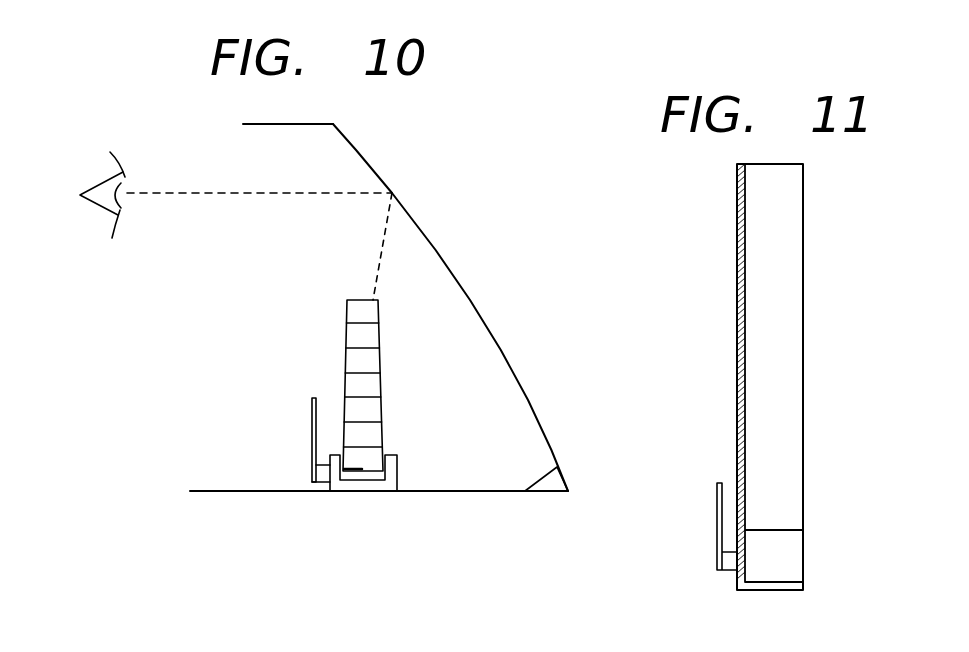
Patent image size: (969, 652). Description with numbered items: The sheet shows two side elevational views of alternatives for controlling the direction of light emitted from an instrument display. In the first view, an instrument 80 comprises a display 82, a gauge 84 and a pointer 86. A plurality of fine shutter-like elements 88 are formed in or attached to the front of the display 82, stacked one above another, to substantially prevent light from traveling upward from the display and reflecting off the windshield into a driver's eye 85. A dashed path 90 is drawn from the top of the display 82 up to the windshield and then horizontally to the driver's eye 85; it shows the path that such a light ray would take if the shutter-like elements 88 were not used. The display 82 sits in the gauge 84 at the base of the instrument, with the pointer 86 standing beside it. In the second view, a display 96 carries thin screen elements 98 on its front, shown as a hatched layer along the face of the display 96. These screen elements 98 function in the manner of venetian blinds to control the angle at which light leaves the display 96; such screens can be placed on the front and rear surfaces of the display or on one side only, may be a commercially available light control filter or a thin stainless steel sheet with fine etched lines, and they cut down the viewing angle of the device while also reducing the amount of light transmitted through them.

In FIG. 10, the instrument 80 is at (237, 392).
In FIG. 10, the display 82 is at (346, 300).
In FIG. 10, the gauge 84 is at (358, 495).
In FIG. 10, the driver's eye 85 is at (105, 223).
In FIG. 10, the pointer 86 is at (303, 458).
In FIG. 10, the shutter-like elements 88 is at (344, 328).
In FIG. 10, the path 90 is at (247, 172).
In FIG. 11, the display 96 is at (790, 372).
In FIG. 11, the screen elements 98 is at (734, 210).